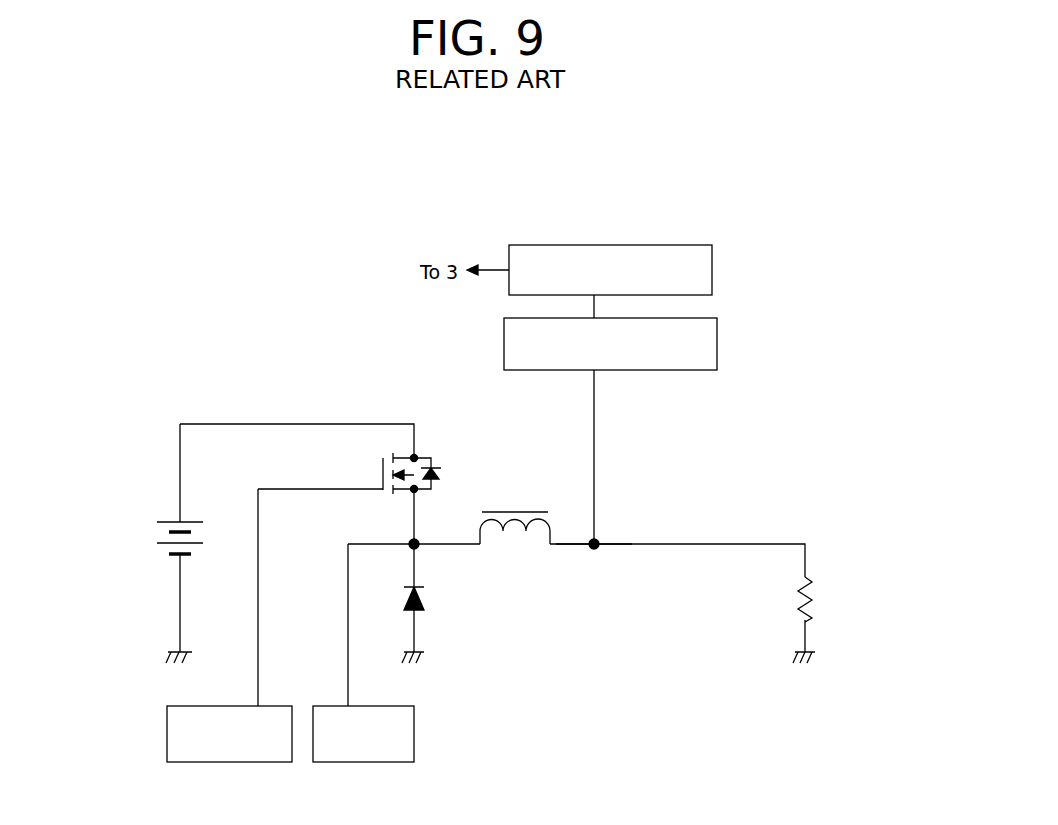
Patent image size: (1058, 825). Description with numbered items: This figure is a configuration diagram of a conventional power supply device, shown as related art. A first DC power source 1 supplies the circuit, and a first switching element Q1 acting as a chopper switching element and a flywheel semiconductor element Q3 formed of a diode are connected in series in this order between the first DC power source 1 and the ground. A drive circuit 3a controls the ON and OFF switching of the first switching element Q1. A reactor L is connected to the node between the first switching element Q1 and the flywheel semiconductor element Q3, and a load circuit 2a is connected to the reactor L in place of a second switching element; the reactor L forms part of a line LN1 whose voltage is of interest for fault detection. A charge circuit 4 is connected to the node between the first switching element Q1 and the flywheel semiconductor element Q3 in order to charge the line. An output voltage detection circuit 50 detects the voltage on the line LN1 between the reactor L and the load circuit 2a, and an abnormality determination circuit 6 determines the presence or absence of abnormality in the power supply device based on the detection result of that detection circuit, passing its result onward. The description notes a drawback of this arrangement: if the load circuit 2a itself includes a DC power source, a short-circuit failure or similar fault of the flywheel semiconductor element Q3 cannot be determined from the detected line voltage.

The first DC power source 1 is at (150, 517).
The first switching element Q1 is at (446, 470).
The flywheel semiconductor element Q3 is at (433, 597).
The reactor L is at (514, 540).
The line LN1 is at (580, 544).
The load circuit 2a is at (823, 598).
The abnormality determination circuit 6 is at (712, 275).
The output voltage detection circuit 50 is at (717, 342).
The drive circuit 3a is at (167, 722).
The charge circuit 4 is at (414, 722).